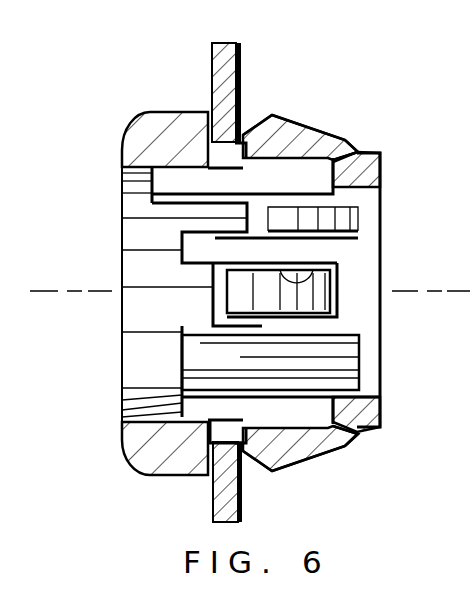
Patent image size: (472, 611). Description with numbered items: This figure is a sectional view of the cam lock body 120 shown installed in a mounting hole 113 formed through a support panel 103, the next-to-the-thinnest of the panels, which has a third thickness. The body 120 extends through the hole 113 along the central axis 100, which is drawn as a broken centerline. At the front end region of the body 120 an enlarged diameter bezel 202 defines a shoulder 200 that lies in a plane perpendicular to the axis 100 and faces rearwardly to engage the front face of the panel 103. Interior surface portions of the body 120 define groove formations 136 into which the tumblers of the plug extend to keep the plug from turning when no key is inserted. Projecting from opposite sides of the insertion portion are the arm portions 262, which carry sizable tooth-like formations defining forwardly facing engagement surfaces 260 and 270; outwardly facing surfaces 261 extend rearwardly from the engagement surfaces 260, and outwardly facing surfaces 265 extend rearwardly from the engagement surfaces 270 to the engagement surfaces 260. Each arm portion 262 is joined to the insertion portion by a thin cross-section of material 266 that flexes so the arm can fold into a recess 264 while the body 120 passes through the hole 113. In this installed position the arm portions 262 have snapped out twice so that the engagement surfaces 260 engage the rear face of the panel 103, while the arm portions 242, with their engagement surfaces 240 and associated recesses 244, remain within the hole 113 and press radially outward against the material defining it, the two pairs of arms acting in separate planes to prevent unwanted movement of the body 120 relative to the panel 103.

The central axis 100 is at (96, 290).
The support panel 103 is at (241, 56).
The mounting hole 113 is at (207, 110).
The body 120 is at (132, 106).
The groove formations 136 is at (340, 368).
The shoulder 200 is at (210, 100).
The bezel 202 is at (143, 474).
The engagement surfaces 240 is at (213, 294).
The arm portions 242 is at (313, 303).
The recesses 244 is at (307, 253).
The engagement surfaces 260 is at (220, 172).
The outwardly facing surfaces 261 is at (283, 120).
The arm portions 262 is at (297, 124).
The recesses 264 is at (322, 170).
The outwardly facing surfaces 265 is at (210, 70).
The thin cross-section of material 266 is at (343, 152).
The engagement surfaces 270 is at (243, 130).